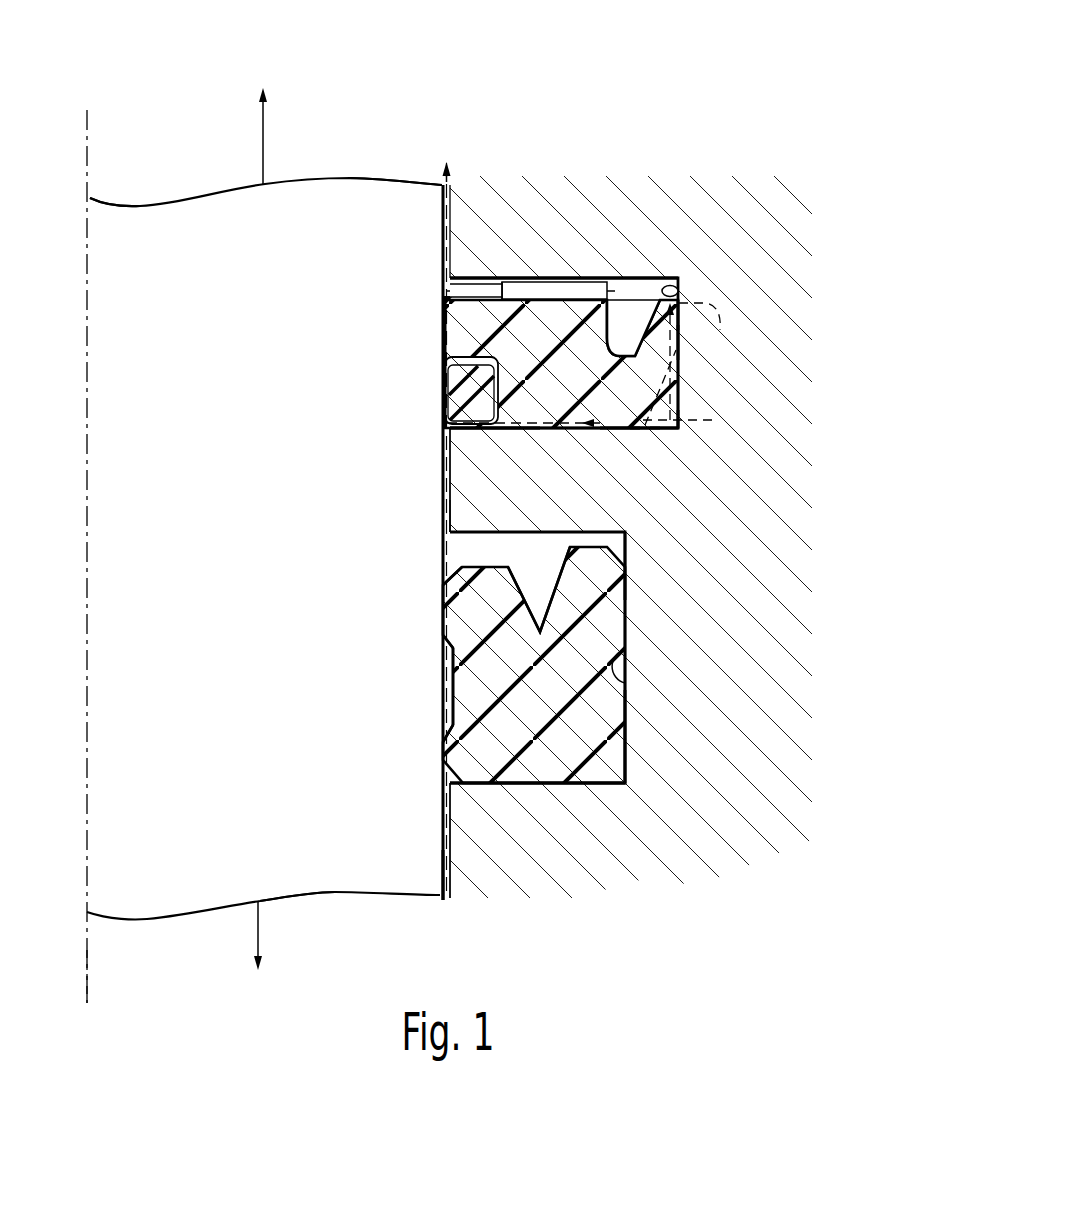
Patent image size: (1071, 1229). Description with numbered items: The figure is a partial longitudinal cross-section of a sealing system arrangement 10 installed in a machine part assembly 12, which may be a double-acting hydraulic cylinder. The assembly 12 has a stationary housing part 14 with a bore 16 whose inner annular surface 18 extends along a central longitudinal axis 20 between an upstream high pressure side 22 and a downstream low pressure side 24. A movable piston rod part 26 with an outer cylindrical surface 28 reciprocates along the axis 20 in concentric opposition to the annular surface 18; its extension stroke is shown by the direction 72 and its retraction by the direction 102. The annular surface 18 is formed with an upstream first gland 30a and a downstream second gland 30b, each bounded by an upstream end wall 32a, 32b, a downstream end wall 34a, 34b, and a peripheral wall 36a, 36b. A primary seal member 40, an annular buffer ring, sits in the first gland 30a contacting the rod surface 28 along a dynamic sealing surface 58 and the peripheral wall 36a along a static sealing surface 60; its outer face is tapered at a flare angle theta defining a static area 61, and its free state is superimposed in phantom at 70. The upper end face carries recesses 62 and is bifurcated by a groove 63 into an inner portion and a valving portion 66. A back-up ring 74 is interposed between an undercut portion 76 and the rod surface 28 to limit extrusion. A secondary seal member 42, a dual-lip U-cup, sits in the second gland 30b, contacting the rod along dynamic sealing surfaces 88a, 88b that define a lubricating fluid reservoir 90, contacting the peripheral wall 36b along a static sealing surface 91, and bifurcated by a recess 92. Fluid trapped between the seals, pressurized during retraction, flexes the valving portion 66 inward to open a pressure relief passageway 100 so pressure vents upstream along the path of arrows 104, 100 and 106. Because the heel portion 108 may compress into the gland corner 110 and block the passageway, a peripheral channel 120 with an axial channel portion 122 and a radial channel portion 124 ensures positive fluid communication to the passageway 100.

The sealing system arrangement 10 is at (717, 63).
The machine part assembly 12 is at (418, 78).
The stationary housing part 14 is at (770, 210).
The bore 16 is at (255, 932).
The inner annular surface 18 is at (440, 858).
The central longitudinal axis 20 is at (88, 978).
The upstream high pressure side 22 is at (311, 147).
The downstream low pressure side 24 is at (173, 987).
The movable piston rod part 26 is at (130, 205).
The outer cylindrical surface 28 is at (448, 898).
The upstream first gland 30a is at (678, 277).
The downstream second gland 30b is at (627, 562).
The upstream end wall of first gland 32a is at (639, 277).
The upstream end wall of second gland 32b is at (490, 538).
The downstream end wall of first gland 34a is at (450, 478).
The downstream end wall of second gland 34b is at (580, 770).
The peripheral wall of first gland 36a is at (678, 298).
The peripheral wall of second gland 36b is at (627, 685).
The primary seal member 40 is at (442, 296).
The secondary seal member 42 is at (445, 568).
The dynamic sealing surface 58 is at (442, 328).
The static sealing surface 60 is at (678, 323).
The static area 61 is at (702, 427).
The recess 62 is at (509, 280).
The groove 63 is at (626, 288).
The valving portion 66 is at (600, 310).
The free state of primary seal member 70 is at (682, 326).
The extension stroke direction 72 is at (262, 930).
The annular back-up ring 74 is at (444, 395).
The undercut portion 76 is at (442, 362).
The first dynamic sealing surface 88a is at (443, 612).
The second dynamic sealing surface 88b is at (443, 745).
The fluid reservoir 90 is at (436, 688).
The static sealing surface of secondary seal 91 is at (627, 703).
The recess 92 is at (540, 622).
The pressure relief passageway 100 is at (677, 373).
The retraction stroke direction 102 is at (263, 165).
The fluid flow path arrow 104 is at (448, 515).
The fluid flow path arrow 106 is at (446, 212).
The heel portion 108 is at (647, 425).
The gland corner 110 is at (679, 430).
The peripheral channel 120 is at (522, 446).
The axial channel portion 122 is at (689, 411).
The radial channel portion 124 is at (633, 428).
The flare angle theta is at (688, 388).